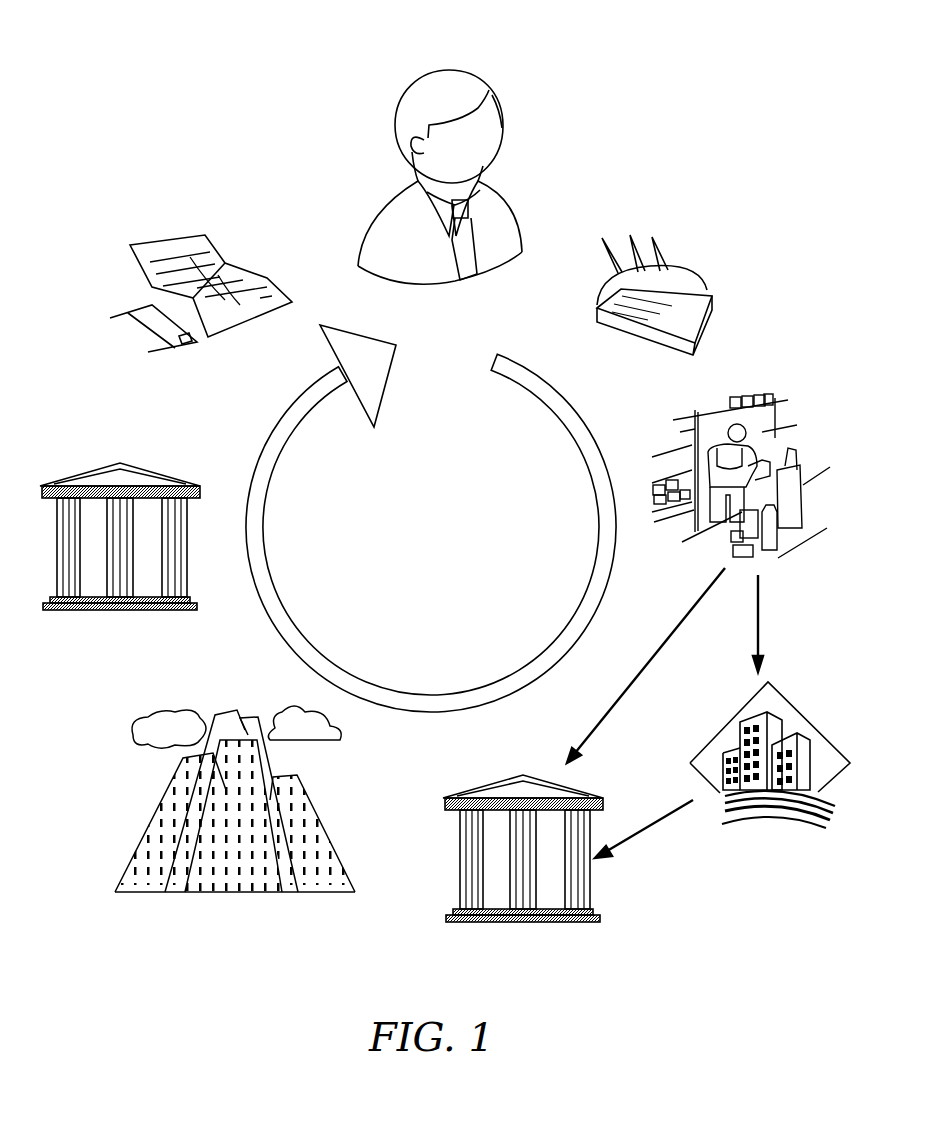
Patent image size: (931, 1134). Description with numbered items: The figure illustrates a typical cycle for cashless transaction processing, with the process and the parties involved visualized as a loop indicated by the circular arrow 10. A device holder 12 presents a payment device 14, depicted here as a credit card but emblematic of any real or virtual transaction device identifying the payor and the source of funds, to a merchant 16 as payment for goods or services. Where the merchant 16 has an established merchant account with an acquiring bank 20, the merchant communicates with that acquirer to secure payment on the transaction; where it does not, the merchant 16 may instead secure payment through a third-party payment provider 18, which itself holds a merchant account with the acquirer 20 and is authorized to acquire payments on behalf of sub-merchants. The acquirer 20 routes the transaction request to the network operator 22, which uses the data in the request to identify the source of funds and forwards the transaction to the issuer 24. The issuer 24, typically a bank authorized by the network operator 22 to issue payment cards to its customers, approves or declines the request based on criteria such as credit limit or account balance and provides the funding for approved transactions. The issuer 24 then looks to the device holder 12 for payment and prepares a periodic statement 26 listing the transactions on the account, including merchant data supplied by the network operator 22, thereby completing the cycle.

The arrow 10 is at (433, 694).
The device holder 12 is at (447, 70).
The payment device 14 is at (693, 303).
The merchant 16 is at (764, 392).
The third-party payment provider 18 is at (760, 797).
The acquiring bank 20 is at (518, 922).
The network operator 22 is at (225, 895).
The issuer 24 is at (118, 612).
The periodic statement 26 is at (168, 241).